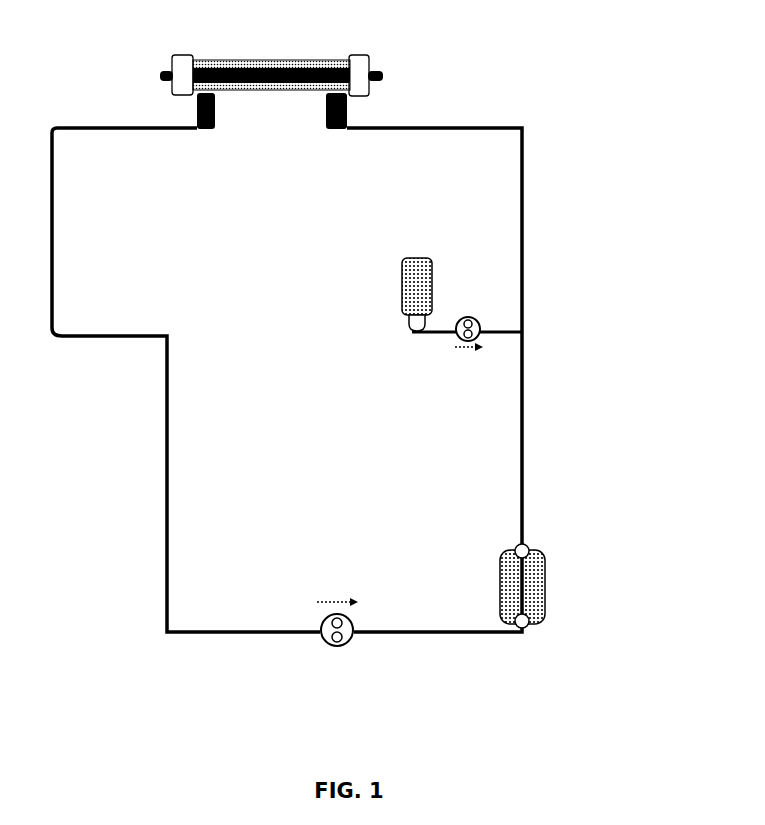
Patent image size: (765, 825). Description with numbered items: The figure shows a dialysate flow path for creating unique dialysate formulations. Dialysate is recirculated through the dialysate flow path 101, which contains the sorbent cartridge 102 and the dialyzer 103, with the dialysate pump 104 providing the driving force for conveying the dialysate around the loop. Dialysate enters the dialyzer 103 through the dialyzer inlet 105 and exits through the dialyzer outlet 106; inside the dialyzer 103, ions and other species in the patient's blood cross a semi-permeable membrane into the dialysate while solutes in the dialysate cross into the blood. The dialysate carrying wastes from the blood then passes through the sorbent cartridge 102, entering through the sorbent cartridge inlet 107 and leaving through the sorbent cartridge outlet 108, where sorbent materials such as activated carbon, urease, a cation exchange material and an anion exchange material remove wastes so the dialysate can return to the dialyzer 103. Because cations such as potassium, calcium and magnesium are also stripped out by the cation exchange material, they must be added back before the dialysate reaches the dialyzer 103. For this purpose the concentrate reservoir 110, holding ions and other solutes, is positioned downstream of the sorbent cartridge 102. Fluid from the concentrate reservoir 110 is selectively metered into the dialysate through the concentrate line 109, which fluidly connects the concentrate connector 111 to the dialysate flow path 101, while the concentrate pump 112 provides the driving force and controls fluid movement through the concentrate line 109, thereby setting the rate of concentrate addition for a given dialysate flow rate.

The dialysate flow path 101 is at (190, 633).
The sorbent cartridge 102 is at (546, 579).
The dialyzer 103 is at (278, 62).
The dialysate pump 104 is at (333, 647).
The dialyzer inlet 105 is at (352, 108).
The dialyzer outlet 106 is at (196, 108).
The sorbent cartridge inlet 107 is at (527, 628).
The sorbent cartridge outlet 108 is at (529, 550).
The concentrate line 109 is at (502, 336).
The concentrate reservoir 110 is at (402, 293).
The concentrate connector 111 is at (412, 332).
The concentrate pump 112 is at (458, 338).